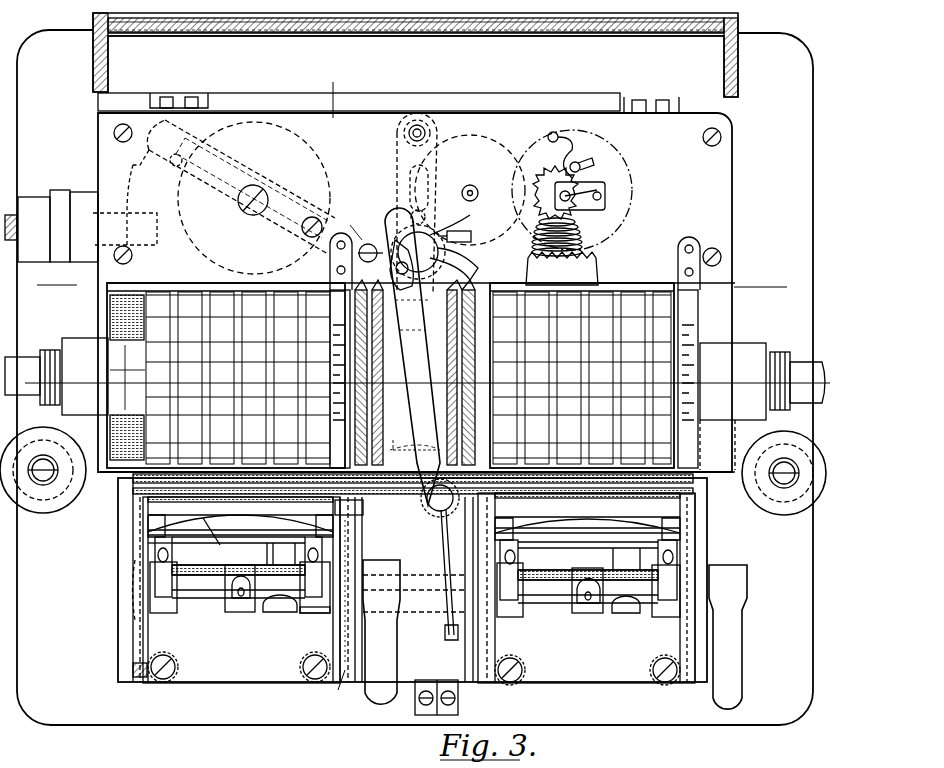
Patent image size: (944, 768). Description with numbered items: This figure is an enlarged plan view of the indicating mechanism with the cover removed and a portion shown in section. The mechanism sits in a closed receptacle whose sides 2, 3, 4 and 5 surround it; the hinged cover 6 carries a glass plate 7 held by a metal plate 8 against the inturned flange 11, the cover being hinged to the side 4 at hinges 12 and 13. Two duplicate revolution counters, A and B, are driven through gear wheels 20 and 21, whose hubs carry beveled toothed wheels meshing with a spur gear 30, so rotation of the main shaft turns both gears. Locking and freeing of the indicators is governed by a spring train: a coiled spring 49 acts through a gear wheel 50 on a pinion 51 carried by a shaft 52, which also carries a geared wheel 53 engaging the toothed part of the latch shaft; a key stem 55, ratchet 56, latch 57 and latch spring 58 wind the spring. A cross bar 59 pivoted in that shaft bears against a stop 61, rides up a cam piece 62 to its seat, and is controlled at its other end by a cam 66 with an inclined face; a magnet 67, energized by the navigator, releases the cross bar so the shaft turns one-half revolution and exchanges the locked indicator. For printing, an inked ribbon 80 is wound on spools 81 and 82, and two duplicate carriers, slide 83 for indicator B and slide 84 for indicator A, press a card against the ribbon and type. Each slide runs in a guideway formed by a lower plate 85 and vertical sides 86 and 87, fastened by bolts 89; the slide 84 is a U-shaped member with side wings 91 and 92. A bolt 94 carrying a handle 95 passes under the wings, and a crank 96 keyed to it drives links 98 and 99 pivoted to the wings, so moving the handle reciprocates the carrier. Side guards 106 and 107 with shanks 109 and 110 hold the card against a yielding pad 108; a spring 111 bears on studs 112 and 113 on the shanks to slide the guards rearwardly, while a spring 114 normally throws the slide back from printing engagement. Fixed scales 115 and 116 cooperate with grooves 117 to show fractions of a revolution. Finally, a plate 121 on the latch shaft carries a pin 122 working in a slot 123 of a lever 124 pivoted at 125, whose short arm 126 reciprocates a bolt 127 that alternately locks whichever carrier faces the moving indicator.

The side 2 is at (98, 158).
The side 3 is at (732, 186).
The side 4 is at (378, 110).
The side 5 is at (332, 390).
The cover 6 is at (93, 42).
The glass plate 7 is at (165, 27).
The metal plate 8 is at (378, 33).
The inturned flange 11 is at (114, 28).
The hinge 12 is at (186, 97).
The hinge 13 is at (650, 100).
The gear wheel 20 is at (472, 294).
The gear wheel 21 is at (352, 292).
The spur gear 30 is at (403, 445).
The coiled spring 49 is at (575, 235).
The gear wheel 50 is at (552, 128).
The pinion 51 is at (480, 194).
The shaft 52 is at (471, 185).
The geared wheel 53 is at (478, 136).
The key stem 55 is at (601, 183).
The ratchet 56 is at (548, 182).
The latch 57 is at (592, 164).
The latch spring 58 is at (575, 152).
The cross bar 59 is at (471, 242).
The stop 61 is at (362, 232).
The cam piece 62 is at (372, 243).
The cam 66 is at (448, 300).
The magnet 67 is at (258, 122).
The inked ribbon 80 is at (120, 508).
The spool 81 is at (43, 513).
The spool 82 is at (784, 516).
The slide 83 is at (582, 399).
The slide 84 is at (258, 500).
The lower plate 85 is at (241, 590).
The vertical side 86 is at (355, 540).
The vertical side 87 is at (125, 628).
The bolts 89 is at (165, 680).
The side wing 91 is at (143, 627).
The side wing 92 is at (318, 620).
The bolt 94 is at (208, 598).
The handle 95 is at (300, 610).
The crank 96 is at (176, 569).
The link 98 is at (305, 548).
The link 99 is at (155, 545).
The side guard 106 is at (322, 500).
The side guard 107 is at (133, 524).
The pad 108 is at (198, 500).
The shank 109 is at (348, 562).
The shank 110 is at (133, 566).
The spring 111 is at (221, 539).
The stud 112 is at (345, 530).
The stud 113 is at (148, 530).
The spring 114 is at (273, 553).
The scale 115 is at (330, 264).
The scale 116 is at (680, 264).
The grooves 117 is at (338, 350).
The plate 121 is at (436, 249).
The pin 122 is at (400, 288).
The slot 123 is at (395, 217).
The lever 124 is at (438, 383).
The pivot 125 is at (437, 513).
The short arm 126 is at (448, 580).
The shaft 127 is at (420, 628).